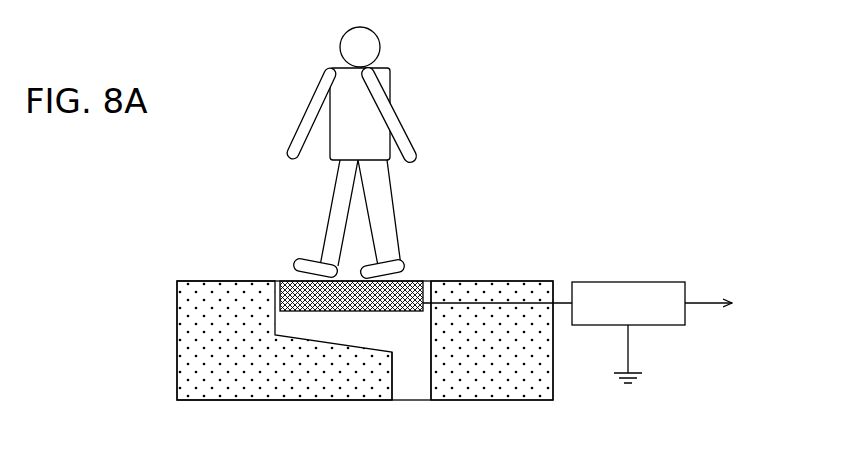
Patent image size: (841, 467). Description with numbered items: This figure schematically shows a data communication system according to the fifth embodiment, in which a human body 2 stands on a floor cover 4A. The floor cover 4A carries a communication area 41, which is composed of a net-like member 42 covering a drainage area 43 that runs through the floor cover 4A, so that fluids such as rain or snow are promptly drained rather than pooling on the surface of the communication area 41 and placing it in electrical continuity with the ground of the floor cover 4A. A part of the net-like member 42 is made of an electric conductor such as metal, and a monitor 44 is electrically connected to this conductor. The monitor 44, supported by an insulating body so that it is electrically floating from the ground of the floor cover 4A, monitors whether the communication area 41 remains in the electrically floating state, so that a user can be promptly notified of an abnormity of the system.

The human body 2 is at (362, 118).
The floor cover 4A is at (232, 404).
The communication area 41 is at (278, 279).
The net-like member 42 is at (413, 280).
The drainage area 43 is at (417, 390).
The monitor 44 is at (660, 282).